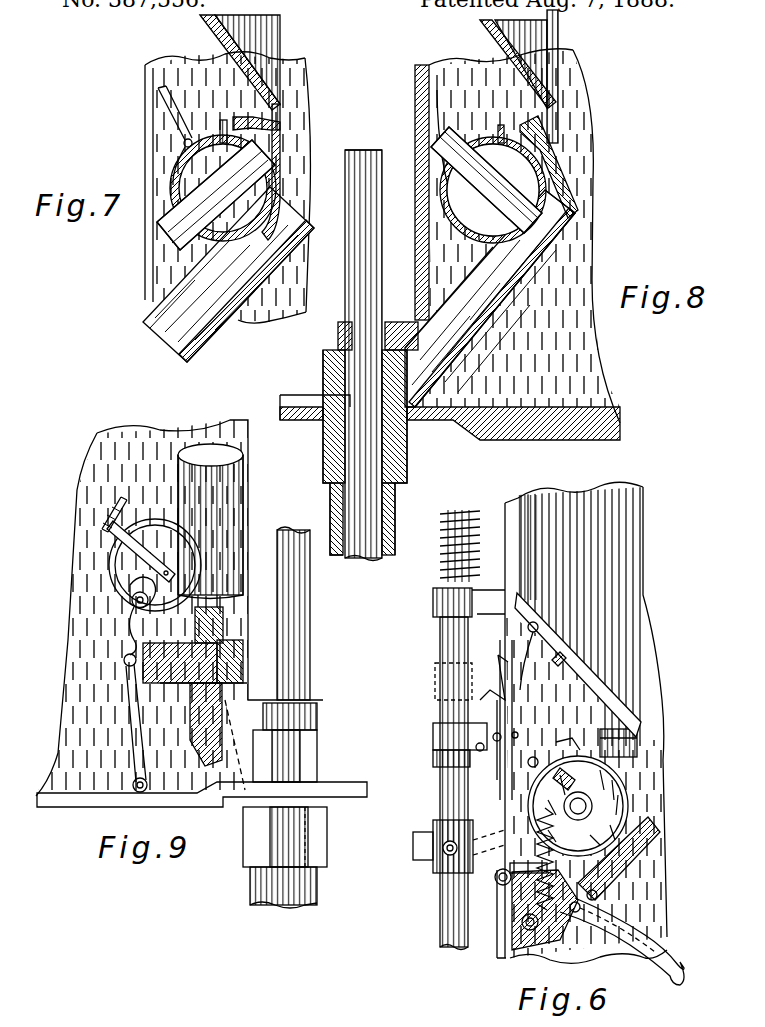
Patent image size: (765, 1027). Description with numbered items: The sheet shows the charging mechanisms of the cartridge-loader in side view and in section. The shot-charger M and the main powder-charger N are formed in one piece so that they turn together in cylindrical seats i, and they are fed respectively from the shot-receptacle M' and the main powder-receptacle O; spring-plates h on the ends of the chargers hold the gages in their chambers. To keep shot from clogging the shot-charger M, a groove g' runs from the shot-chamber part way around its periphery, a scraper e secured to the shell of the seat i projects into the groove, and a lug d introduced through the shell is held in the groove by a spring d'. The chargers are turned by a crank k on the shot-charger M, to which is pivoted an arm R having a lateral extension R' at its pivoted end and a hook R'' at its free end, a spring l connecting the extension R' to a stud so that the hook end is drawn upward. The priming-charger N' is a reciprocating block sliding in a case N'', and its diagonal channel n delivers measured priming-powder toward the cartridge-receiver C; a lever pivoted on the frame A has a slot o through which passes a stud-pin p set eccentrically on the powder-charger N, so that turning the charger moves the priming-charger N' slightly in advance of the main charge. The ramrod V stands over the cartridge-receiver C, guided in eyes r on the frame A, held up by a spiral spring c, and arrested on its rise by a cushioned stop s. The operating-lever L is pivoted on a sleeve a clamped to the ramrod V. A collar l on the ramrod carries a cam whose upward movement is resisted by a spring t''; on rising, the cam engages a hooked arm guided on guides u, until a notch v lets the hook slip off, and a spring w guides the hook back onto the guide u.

In FIG. 7, the upright frame A is at (228, 187).
In FIG. 8, the upright frame A is at (517, 236).
In FIG. 6, the upright frame A is at (645, 737).
In FIG. 7, the diagonal channel n is at (240, 72).
In FIG. 8, the diagonal channel n is at (519, 76).
In FIG. 7, the stud-pin p is at (228, 274).
In FIG. 9, the stud-pin p is at (131, 601).
In FIG. 8, the plank P is at (490, 298).
In FIG. 7, the main powder-charger N is at (175, 134).
In FIG. 9, the main powder-charger N is at (155, 565).
In FIG. 7, the spring / collar l is at (216, 192).
In FIG. 8, the spring / collar l is at (486, 180).
In FIG. 6, the spring / collar l is at (433, 738).
In FIG. 7, the scraper e is at (256, 178).
In FIG. 8, the scraper e is at (549, 167).
In FIG. 7, the sleeve a is at (219, 123).
In FIG. 8, the sleeve a is at (496, 125).
In FIG. 8, the cylindrical seat i is at (493, 190).
In FIG. 8, the notch v is at (351, 238).
In FIG. 6, the notch v is at (471, 673).
In FIG. 8, the cartridge-receiver C is at (450, 438).
In FIG. 9, the cartridge-receiver C is at (285, 819).
In FIG. 9, the guides u is at (124, 722).
In FIG. 6, the guides u is at (497, 906).
In FIG. 9, the main powder-receptacle O is at (210, 543).
In FIG. 9, the spring-plates h is at (138, 539).
In FIG. 6, the spring-plates h is at (560, 783).
In FIG. 9, the slot o is at (143, 589).
In FIG. 9, the priming-charger N' is at (195, 670).
In FIG. 9, the case N'' is at (191, 724).
In FIG. 9, the ramrod V is at (293, 613).
In FIG. 6, the ramrod V is at (440, 638).
In FIG. 9, the collar r' is at (302, 716).
In FIG. 6, the shot-receptacle M' is at (569, 722).
In FIG. 6, the spring w is at (570, 696).
In FIG. 6, the shot-charger M is at (578, 806).
In FIG. 6, the crank k is at (567, 848).
In FIG. 6, the arm R is at (615, 868).
In FIG. 6, the lateral extension R' is at (545, 910).
In FIG. 6, the hook R'' is at (628, 941).
In FIG. 6, the spiral spring c is at (440, 556).
In FIG. 6, the guide-eyes r is at (440, 602).
In FIG. 6, the cushioned stop s is at (433, 726).
In FIG. 6, the spring t'' is at (500, 740).
In FIG. 6, the operating-lever L is at (433, 812).
In FIG. 6, the groove g' is at (512, 874).
In FIG. 6, the lug d is at (568, 742).
In FIG. 6, the spring d' is at (560, 746).